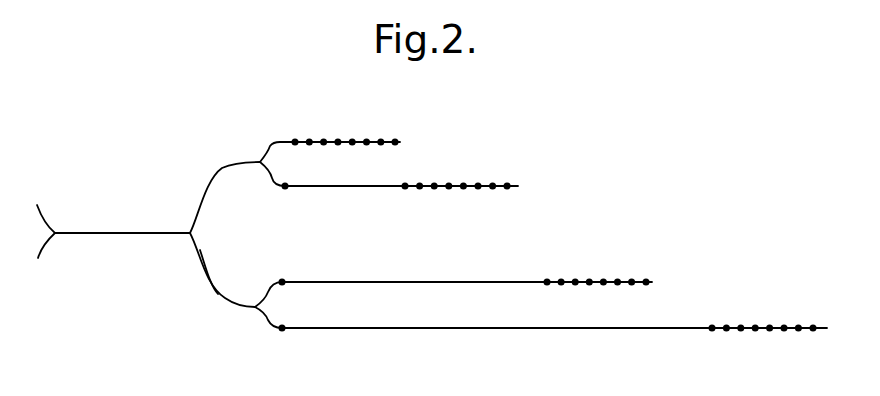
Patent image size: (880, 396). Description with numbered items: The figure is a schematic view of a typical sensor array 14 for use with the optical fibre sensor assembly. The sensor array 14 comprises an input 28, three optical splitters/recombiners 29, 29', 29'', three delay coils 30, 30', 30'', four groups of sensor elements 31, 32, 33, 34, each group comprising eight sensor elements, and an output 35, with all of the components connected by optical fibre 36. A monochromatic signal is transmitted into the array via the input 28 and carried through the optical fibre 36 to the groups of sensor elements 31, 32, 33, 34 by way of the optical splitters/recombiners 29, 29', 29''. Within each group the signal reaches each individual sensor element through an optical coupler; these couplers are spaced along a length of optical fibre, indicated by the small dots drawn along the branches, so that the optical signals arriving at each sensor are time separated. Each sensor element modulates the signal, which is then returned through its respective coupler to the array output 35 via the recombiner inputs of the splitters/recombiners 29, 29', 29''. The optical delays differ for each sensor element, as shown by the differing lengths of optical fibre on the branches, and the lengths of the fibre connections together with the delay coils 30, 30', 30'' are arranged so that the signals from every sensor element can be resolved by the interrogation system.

The sensor array 14 is at (650, 173).
The input 28 is at (43, 247).
The output 35 is at (42, 212).
The optical splitter/recombiner 29 is at (209, 234).
The optical splitter/recombiner 29' is at (252, 153).
The optical splitter/recombiner 29'' is at (251, 317).
The delay coil 30 is at (301, 209).
The delay coil 30' is at (308, 352).
The delay coil 30'' is at (313, 304).
The group of sensor elements 31 is at (400, 135).
The group of sensor elements 32 is at (513, 176).
The group of sensor elements 33 is at (650, 272).
The group of sensor elements 34 is at (820, 318).
The optical fibre 36 is at (208, 298).